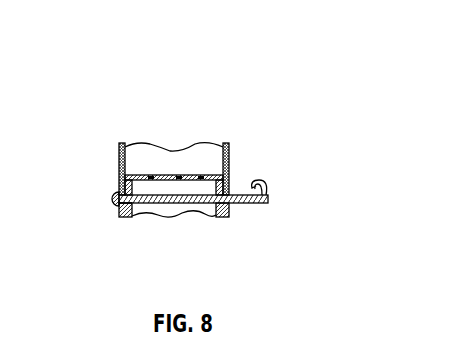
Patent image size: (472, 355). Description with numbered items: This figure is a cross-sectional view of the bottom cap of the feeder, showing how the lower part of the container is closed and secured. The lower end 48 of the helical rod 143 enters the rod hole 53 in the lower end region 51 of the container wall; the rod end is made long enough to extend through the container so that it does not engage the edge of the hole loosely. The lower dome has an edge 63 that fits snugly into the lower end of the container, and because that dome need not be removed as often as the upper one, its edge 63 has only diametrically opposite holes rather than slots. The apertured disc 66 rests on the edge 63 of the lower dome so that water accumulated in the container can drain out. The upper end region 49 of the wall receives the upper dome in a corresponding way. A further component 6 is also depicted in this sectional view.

The bolt 6 is at (116, 208).
The lower end 48 is at (168, 204).
The upper end region 49 is at (110, 202).
The lower end region 51 is at (232, 208).
The rod hole 53 is at (232, 190).
The edge 63 is at (127, 217).
The apertured disc 66 is at (182, 175).
The helical rod 143 is at (270, 183).